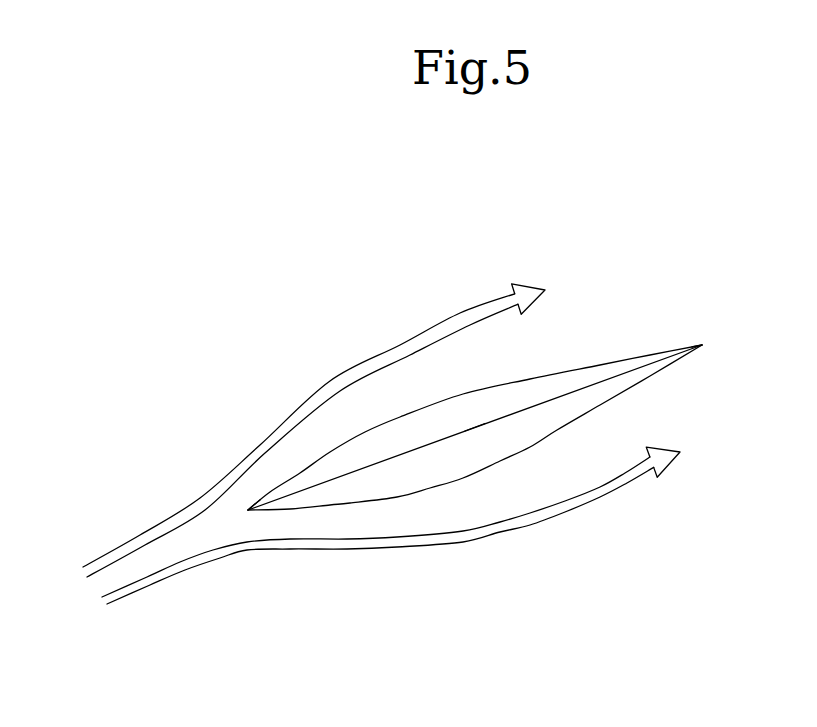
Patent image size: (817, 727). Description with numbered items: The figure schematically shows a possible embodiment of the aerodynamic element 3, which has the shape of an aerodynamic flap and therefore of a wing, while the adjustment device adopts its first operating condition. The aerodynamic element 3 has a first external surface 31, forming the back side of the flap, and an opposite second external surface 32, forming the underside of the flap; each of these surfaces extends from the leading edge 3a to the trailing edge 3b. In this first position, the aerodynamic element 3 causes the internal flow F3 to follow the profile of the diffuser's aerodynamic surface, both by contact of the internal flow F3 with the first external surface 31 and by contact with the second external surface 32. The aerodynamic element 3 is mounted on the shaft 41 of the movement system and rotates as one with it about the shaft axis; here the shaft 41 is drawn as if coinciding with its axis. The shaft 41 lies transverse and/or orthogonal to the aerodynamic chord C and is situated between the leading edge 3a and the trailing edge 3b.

The aerodynamic element 3 is at (479, 446).
The first external surface 31 is at (320, 458).
The second external surface 32 is at (350, 504).
The leading edge 3a is at (248, 510).
The trailing edge 3b is at (703, 347).
The aerodynamic chord C is at (557, 397).
The shaft 41 is at (475, 427).
The internal flow F3 is at (440, 323).